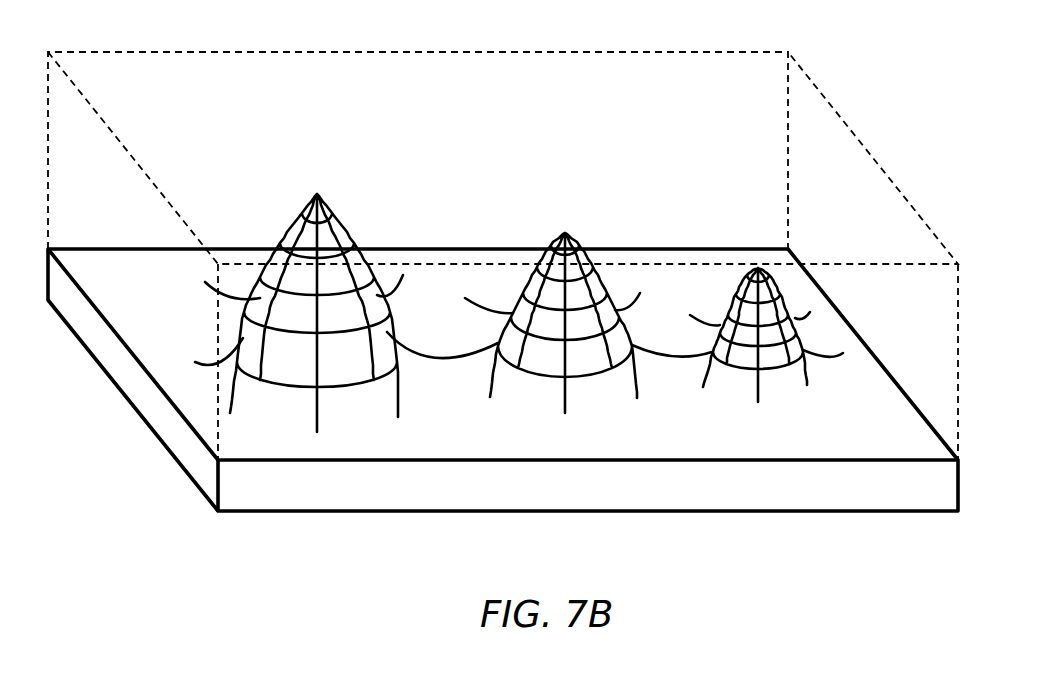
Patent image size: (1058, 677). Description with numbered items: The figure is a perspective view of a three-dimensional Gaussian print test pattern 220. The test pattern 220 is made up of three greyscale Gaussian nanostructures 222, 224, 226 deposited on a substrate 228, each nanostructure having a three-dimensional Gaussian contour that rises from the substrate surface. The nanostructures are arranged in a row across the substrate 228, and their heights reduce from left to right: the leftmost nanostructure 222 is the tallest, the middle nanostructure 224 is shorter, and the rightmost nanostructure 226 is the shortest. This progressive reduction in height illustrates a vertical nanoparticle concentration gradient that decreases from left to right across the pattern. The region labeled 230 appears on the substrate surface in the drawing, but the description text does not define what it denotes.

The 3-dimension test pattern 220 is at (829, 43).
The greyscale Gaussian nanostructure 222 is at (305, 176).
The greyscale Gaussian nanostructure 224 is at (535, 236).
The greyscale Gaussian nanostructure 226 is at (720, 277).
The substrate 228 is at (337, 511).
The substrate surface 230 is at (410, 184).